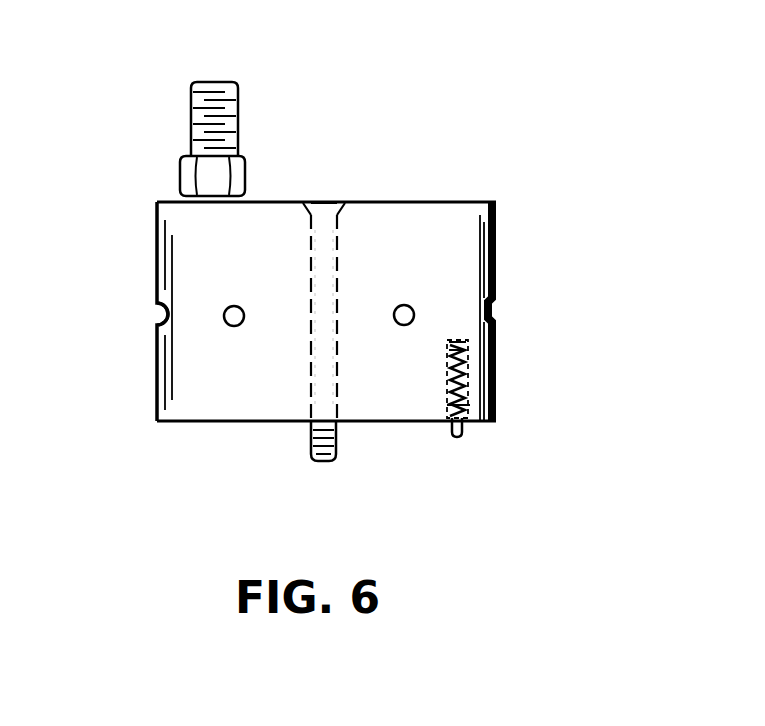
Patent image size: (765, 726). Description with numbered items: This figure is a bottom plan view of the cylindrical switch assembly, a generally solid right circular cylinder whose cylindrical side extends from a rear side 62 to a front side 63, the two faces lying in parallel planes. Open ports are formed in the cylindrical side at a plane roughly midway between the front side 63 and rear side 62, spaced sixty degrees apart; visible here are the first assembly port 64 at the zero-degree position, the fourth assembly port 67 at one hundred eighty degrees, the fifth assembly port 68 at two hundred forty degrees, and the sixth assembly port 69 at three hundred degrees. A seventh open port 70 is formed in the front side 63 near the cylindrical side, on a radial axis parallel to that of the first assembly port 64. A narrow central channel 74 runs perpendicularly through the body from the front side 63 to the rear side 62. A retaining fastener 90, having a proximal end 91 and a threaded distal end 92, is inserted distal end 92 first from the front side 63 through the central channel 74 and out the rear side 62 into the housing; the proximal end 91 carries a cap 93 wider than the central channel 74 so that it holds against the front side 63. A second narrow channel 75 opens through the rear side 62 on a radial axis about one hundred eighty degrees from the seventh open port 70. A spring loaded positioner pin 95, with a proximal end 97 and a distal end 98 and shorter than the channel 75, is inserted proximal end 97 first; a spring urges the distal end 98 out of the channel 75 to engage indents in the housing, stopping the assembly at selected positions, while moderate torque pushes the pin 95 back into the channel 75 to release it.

The rear side 62 is at (205, 423).
The front side 63 is at (472, 201).
The first assembly port 64 is at (155, 332).
The fourth assembly port 67 is at (495, 305).
The fifth assembly port 68 is at (408, 326).
The sixth assembly port 69 is at (236, 327).
The seventh open port 70 is at (192, 182).
The central channel 74 is at (340, 305).
The channel 75 is at (450, 383).
The retaining fastener 90 is at (330, 257).
The proximal end 91 is at (333, 203).
The threaded distal end 92 is at (313, 437).
The cap 93 is at (307, 200).
The spring loaded positioner pin 95 is at (470, 392).
The proximal end 97 is at (470, 341).
The distal end 98 is at (458, 438).